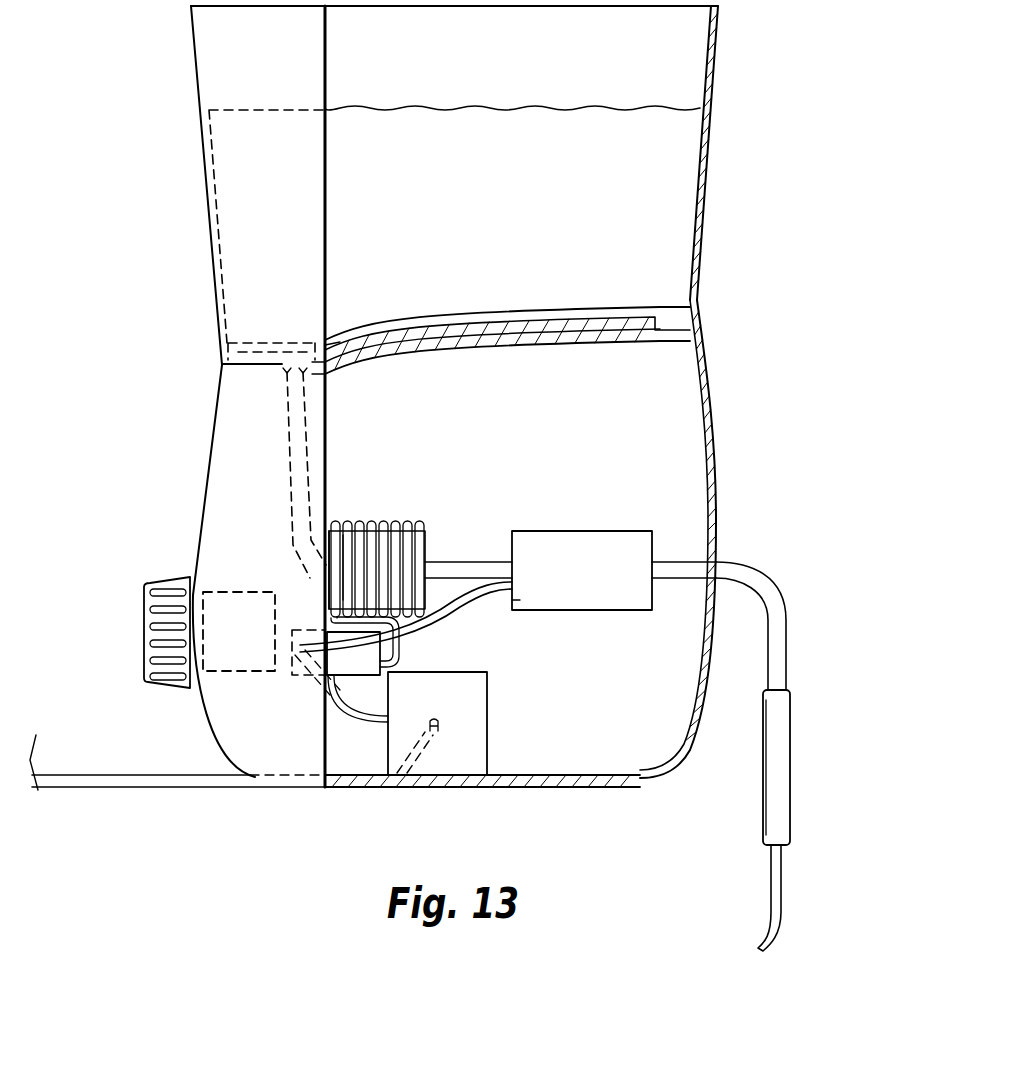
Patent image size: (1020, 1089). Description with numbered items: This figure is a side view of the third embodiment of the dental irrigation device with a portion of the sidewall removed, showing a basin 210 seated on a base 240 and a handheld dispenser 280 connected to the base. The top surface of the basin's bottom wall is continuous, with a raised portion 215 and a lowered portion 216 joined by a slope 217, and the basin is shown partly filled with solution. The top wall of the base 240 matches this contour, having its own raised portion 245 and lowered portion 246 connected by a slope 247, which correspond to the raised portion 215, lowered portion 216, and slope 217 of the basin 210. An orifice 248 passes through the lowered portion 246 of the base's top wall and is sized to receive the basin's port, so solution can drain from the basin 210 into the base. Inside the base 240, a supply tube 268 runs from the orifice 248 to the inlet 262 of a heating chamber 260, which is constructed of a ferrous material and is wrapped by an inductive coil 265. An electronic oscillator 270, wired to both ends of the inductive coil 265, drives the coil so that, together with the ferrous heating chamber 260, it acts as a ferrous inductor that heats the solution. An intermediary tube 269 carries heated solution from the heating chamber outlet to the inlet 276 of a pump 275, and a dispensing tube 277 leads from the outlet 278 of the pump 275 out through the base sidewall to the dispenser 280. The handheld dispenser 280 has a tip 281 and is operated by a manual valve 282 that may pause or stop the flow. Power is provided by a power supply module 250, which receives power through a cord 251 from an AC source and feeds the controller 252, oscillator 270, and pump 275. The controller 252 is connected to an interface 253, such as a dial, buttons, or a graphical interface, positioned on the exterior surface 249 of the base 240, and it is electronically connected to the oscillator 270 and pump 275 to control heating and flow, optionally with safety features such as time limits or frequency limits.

The basin 210 is at (712, 88).
The raised portion 215 is at (682, 312).
The lowered portion 216 is at (318, 355).
The slope 217 is at (483, 323).
The base 240 is at (700, 408).
The raised portion 245 is at (653, 341).
The lowered portion 246 is at (295, 362).
The slope 247 is at (390, 335).
The orifice 248 is at (280, 357).
The exterior surface 249 is at (267, 522).
The power supply module 250 is at (429, 768).
The cord 251 is at (52, 790).
The controller 252 is at (215, 672).
The interface 253 is at (146, 631).
The heating chamber 260 is at (427, 527).
The inlet 262 is at (340, 550).
The inductive coil 265 is at (323, 578).
The supply tube 268 is at (287, 437).
The intermediary tube 269 is at (457, 555).
The oscillator 270 is at (298, 675).
The pump 275 is at (605, 612).
The inlet 276 is at (488, 592).
The dispensing tube 277 is at (788, 643).
The outlet 278 is at (653, 553).
The dispenser 280 is at (792, 768).
The tip 281 is at (780, 925).
The manual valve 282 is at (778, 812).